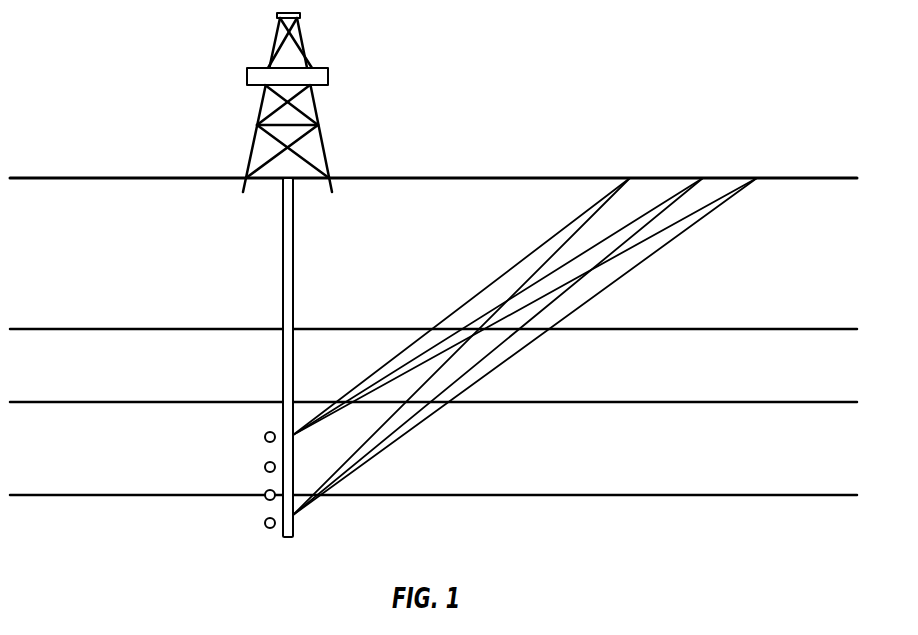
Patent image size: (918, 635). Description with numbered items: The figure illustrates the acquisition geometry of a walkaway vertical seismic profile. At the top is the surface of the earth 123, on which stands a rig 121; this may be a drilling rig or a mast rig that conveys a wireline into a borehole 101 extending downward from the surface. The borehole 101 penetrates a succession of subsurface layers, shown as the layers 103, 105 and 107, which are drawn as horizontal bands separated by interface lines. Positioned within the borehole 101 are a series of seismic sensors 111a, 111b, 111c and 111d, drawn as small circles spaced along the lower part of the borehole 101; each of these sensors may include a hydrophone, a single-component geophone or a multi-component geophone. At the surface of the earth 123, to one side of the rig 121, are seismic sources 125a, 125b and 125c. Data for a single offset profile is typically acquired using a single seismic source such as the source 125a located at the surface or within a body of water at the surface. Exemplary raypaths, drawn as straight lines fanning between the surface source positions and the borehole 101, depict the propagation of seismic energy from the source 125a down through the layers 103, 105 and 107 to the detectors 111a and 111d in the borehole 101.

The borehole 101 is at (283, 263).
The layer 103 is at (68, 264).
The layer 105 is at (68, 382).
The third formation layer 107 is at (68, 552).
The seismic sensor 111a is at (265, 437).
The seismic sensor 111b is at (265, 467).
The seismic sensor 111c is at (265, 495).
The seismic sensor 111d is at (265, 523).
The rig 121 is at (313, 70).
The surface of the earth 123 is at (408, 178).
The seismic source 125a is at (630, 178).
The surface receiver 125b is at (703, 178).
The surface receiver 125c is at (757, 178).